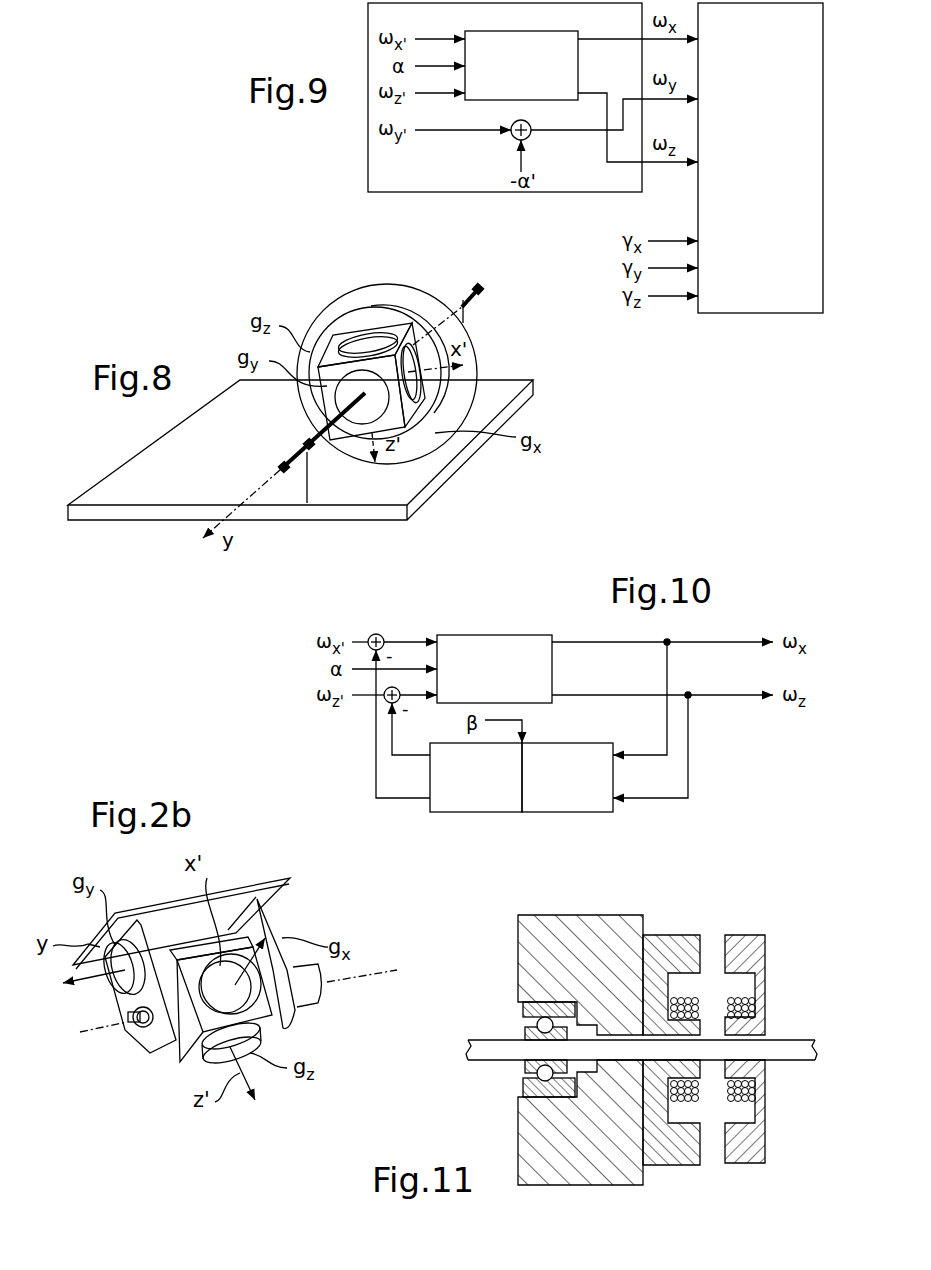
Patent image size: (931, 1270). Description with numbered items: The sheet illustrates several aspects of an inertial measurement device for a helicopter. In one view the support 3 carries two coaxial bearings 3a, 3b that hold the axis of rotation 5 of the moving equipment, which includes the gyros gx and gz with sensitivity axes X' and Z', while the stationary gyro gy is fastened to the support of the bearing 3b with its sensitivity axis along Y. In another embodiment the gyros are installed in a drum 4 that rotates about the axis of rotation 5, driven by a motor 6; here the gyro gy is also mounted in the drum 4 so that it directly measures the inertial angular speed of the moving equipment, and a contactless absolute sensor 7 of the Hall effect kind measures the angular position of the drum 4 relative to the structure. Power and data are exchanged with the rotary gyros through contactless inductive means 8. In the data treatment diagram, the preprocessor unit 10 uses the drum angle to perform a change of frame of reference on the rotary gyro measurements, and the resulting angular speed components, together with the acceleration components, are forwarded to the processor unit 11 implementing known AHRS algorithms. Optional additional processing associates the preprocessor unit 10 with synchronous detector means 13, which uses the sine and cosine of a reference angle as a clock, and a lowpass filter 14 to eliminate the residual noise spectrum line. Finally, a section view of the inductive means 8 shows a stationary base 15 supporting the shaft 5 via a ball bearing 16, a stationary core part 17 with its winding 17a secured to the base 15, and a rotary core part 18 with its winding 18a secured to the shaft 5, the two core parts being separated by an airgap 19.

In FIG. 8, the support 3 is at (107, 477).
In FIG. 2b, the support 3 is at (287, 897).
In FIG. 2b, the bearing 3a is at (297, 1020).
In FIG. 2b, the bearing 3b is at (147, 1048).
In FIG. 8, the drum 4 is at (470, 327).
In FIG. 8, the axis of rotation 5 is at (311, 418).
In FIG. 2b, the axis of rotation 5 is at (370, 975).
In FIG. 11, the axis of rotation 5 is at (490, 1062).
In FIG. 8, the motor 6 is at (470, 276).
In FIG. 8, the contactless absolute sensor 7 is at (318, 452).
In FIG. 8, the inductive means 8 is at (293, 476).
In FIG. 11, the inductive means 8 is at (575, 1188).
In FIG. 9, the preprocessor unit 10 is at (509, 78).
In FIG. 10, the preprocessor unit 10 is at (483, 682).
In FIG. 9, the processor unit 11 is at (748, 163).
In FIG. 10, the synchronous detector means 13 is at (555, 790).
In FIG. 10, the lowpass filter 14 is at (465, 790).
In FIG. 11, the stationary base 15 is at (555, 915).
In FIG. 11, the ball bearing 16 is at (518, 1032).
In FIG. 11, the stationary part of ferromagnetic core 17 is at (683, 935).
In FIG. 11, the winding 17a is at (698, 993).
In FIG. 11, the rotary part of ferromagnetic core 18 is at (758, 937).
In FIG. 11, the winding 18a is at (748, 993).
In FIG. 11, the airgap 19 is at (715, 1153).